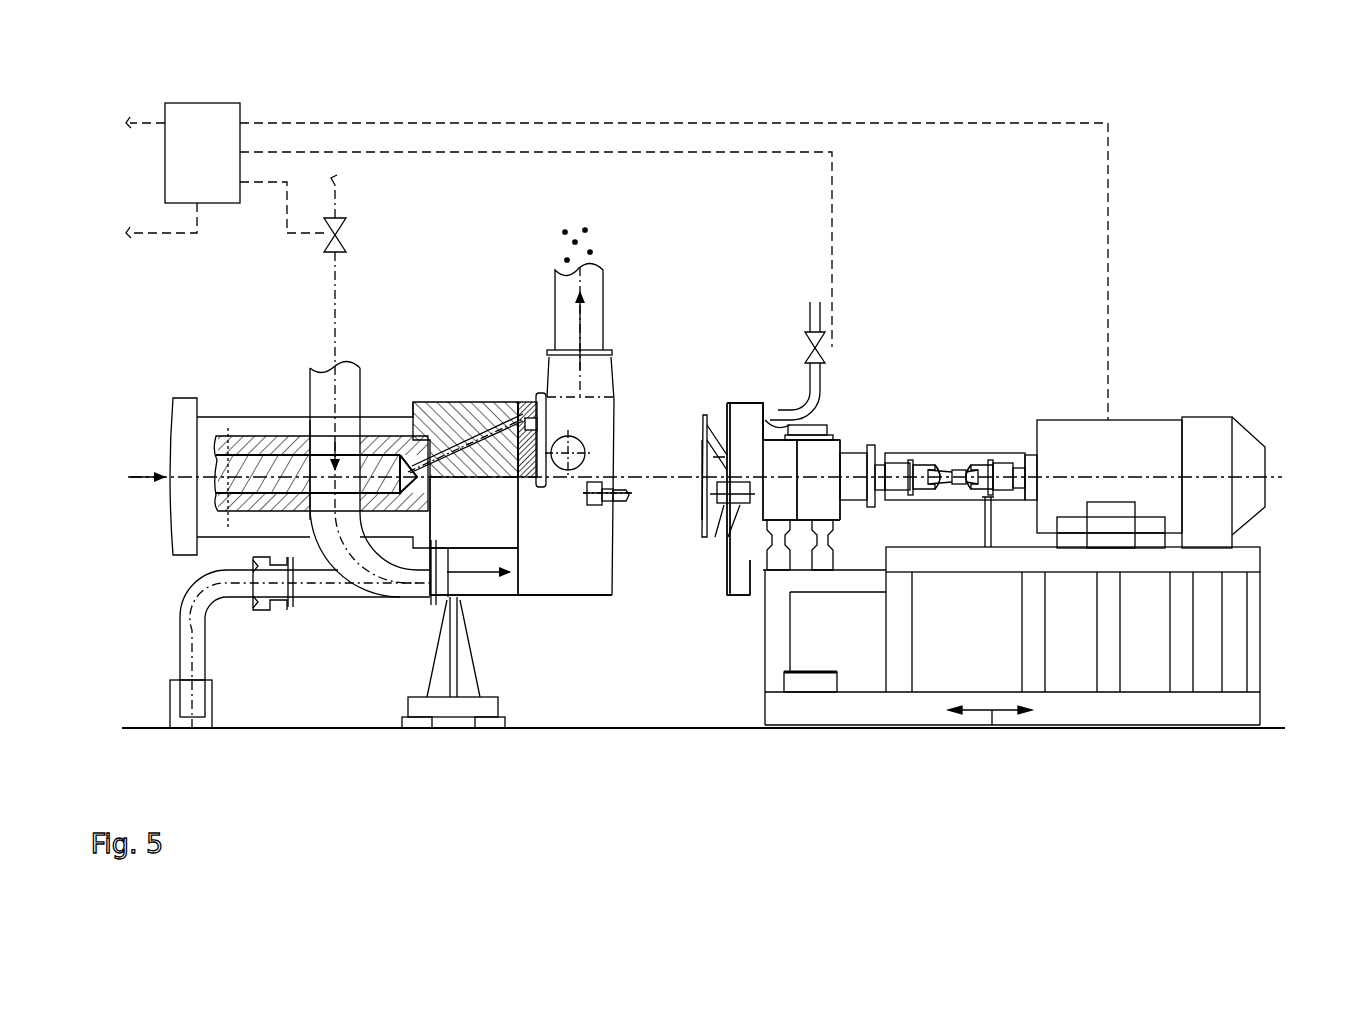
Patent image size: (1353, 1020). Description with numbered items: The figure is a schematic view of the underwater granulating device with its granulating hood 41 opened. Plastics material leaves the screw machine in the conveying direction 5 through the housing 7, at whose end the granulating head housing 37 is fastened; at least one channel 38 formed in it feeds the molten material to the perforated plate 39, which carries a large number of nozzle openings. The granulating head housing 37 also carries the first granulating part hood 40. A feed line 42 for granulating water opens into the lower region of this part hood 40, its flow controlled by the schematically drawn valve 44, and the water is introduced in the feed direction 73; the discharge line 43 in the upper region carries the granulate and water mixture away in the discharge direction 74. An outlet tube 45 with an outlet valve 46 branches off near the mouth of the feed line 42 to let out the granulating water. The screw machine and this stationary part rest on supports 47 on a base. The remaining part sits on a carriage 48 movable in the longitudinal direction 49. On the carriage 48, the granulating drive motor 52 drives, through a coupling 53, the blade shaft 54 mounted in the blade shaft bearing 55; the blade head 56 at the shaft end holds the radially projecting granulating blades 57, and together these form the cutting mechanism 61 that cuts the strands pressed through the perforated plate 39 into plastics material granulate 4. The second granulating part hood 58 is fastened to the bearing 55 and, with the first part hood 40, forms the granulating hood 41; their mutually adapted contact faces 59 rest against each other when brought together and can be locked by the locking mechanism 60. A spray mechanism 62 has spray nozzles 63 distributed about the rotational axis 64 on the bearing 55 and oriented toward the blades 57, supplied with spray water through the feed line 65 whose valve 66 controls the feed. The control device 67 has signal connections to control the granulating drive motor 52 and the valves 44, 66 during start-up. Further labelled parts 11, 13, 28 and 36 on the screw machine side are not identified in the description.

The plastics material granulate 4 is at (563, 232).
The conveying direction 5 is at (135, 473).
The housing 7 is at (183, 368).
The barrel 11 is at (224, 412).
The screw tip 13 is at (420, 443).
The inlet channel 28 is at (413, 398).
The screw 36 is at (382, 417).
The granulating head housing 37 is at (494, 398).
The channel 38 is at (467, 398).
The perforated plate 39 is at (534, 396).
The first granulating part hood 40 is at (555, 590).
The granulating hood 41 is at (597, 600).
The feed line 42 is at (323, 385).
The discharge line 43 is at (580, 275).
The valve 44 is at (340, 242).
The outlet tube 45 is at (322, 590).
The outlet valve 46 is at (273, 590).
The supports 47 is at (435, 690).
The carriage 48 is at (1272, 560).
The longitudinal direction 49 is at (990, 728).
The granulating drive motor 52 is at (1087, 447).
The coupling 53 is at (952, 470).
The blade shaft 54 is at (898, 468).
The blade shaft bearing 55 is at (765, 420).
The blade head 56 is at (697, 456).
The granulating blades 57 is at (718, 422).
The second granulating part hood 58 is at (783, 675).
The contact faces 59 is at (612, 545).
The locking mechanism 60 is at (614, 470).
The cutting mechanism 61 is at (858, 440).
The spray mechanism 62 is at (730, 425).
The spray nozzles 63 is at (724, 441).
The rotational axis 64 is at (1166, 477).
The feed line 65 is at (815, 380).
The valve 66 is at (820, 333).
The control device 67 is at (200, 112).
The feed direction 73 is at (310, 432).
The discharge direction 74 is at (582, 320).